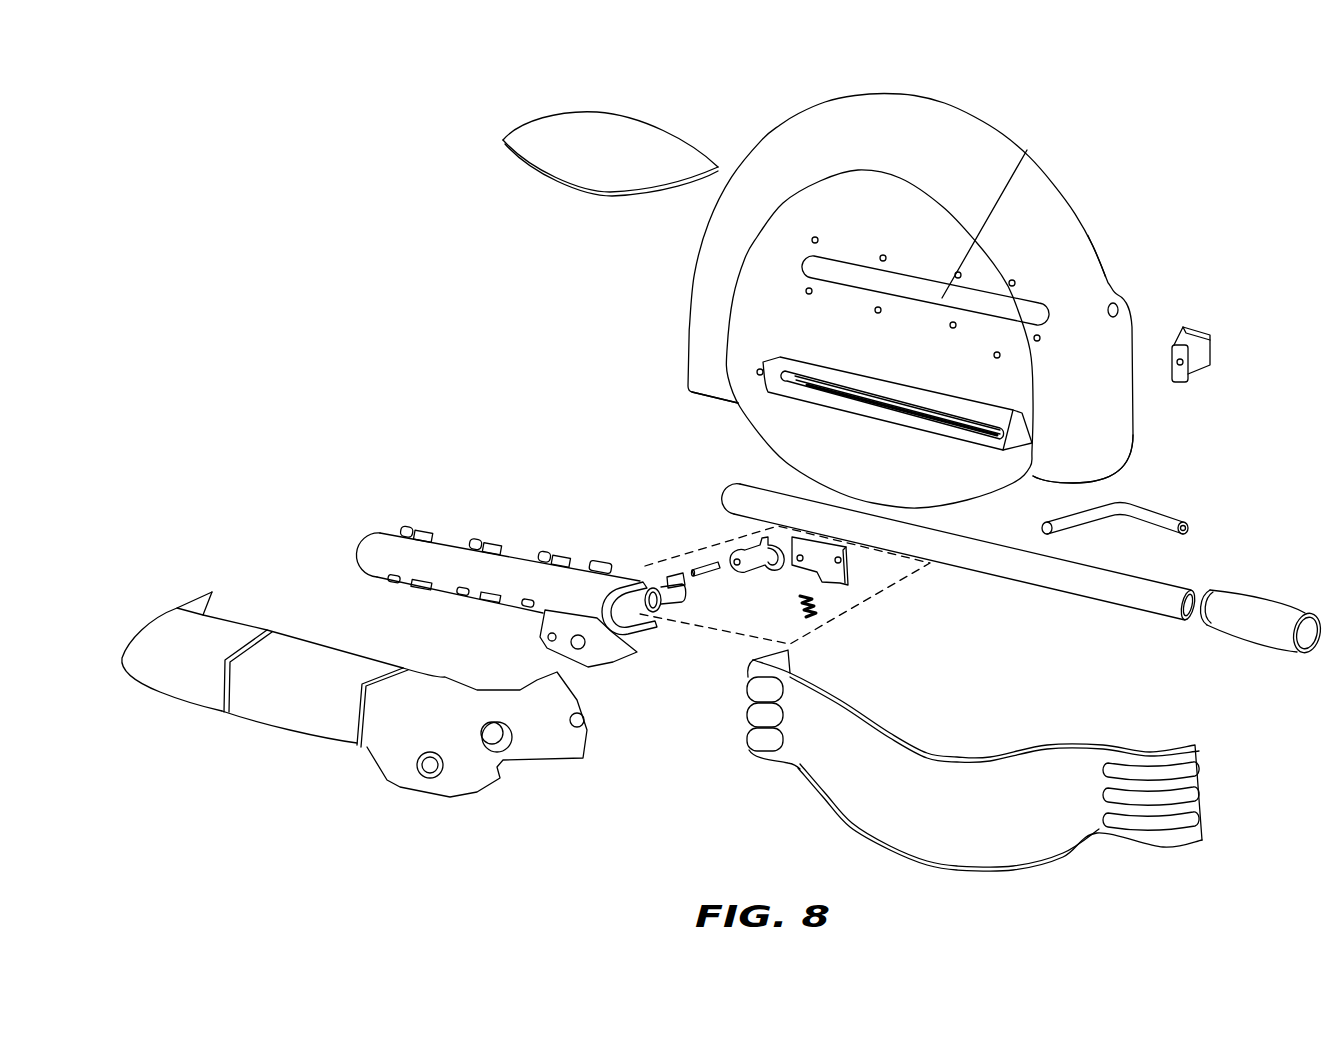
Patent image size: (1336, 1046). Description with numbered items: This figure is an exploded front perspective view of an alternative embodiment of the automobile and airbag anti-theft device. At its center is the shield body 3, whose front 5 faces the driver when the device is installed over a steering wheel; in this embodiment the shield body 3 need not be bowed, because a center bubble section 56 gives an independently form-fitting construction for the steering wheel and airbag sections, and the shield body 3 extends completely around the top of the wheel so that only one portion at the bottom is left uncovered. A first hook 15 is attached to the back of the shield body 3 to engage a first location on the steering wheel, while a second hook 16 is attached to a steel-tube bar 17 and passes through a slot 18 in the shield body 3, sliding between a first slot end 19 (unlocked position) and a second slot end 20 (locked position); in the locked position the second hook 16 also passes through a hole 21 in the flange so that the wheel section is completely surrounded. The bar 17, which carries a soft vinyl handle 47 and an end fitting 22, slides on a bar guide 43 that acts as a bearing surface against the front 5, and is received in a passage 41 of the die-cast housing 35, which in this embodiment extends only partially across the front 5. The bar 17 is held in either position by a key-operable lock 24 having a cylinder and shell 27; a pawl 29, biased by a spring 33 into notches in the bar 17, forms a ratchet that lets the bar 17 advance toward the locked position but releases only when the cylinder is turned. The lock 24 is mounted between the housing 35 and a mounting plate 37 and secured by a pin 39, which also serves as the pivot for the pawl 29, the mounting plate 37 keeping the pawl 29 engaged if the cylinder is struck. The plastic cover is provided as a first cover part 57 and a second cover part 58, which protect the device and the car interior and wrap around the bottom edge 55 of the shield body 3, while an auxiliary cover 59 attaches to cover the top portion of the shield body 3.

The shield body 3 is at (779, 126).
The front 5 is at (877, 358).
The first hook 15 is at (1203, 348).
The second hook 16 is at (1157, 520).
The bar 17 is at (1105, 590).
The slot 18 is at (1027, 150).
The first slot end 19 is at (811, 268).
The second slot end 20 is at (1050, 317).
The hole 21 is at (1120, 306).
The rod end cap 22 is at (1187, 527).
The key-operable lock 24 is at (873, 598).
The shell 27 is at (667, 580).
The pawl 29 is at (743, 558).
The spring 33 is at (815, 610).
The housing 35 is at (373, 547).
The mounting plate 37 is at (848, 555).
The pin 39 is at (705, 567).
The passage 41 is at (624, 608).
The bar guide 43 is at (772, 385).
The handle 47 is at (1260, 610).
The bottom edge 55 is at (990, 493).
The center bubble section 56 is at (755, 410).
The first cover part 57 is at (1023, 743).
The second cover part 58 is at (543, 762).
The auxiliary cover 59 is at (580, 115).